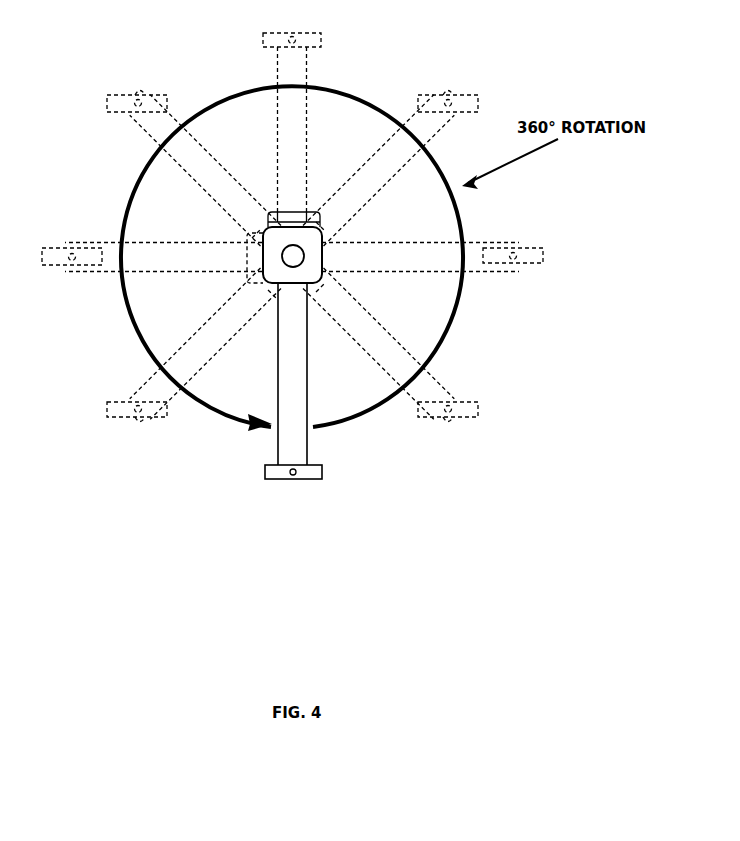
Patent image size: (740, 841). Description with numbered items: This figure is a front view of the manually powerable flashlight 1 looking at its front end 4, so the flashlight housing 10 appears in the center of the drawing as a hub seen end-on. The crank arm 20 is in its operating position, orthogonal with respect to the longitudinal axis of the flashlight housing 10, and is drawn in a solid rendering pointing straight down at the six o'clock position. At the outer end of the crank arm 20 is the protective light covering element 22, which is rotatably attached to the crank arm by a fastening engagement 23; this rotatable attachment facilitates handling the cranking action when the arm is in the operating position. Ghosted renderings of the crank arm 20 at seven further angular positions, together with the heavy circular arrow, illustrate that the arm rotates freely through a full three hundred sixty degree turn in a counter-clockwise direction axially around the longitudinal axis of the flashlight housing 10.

The manually powerable flashlight 1 is at (96, 157).
The front end 4 is at (307, 270).
The flashlight housing 10 is at (320, 233).
The crank arm 20 is at (292, 435).
The protective light covering element 22 is at (308, 474).
The fastening engagement 23 is at (290, 477).